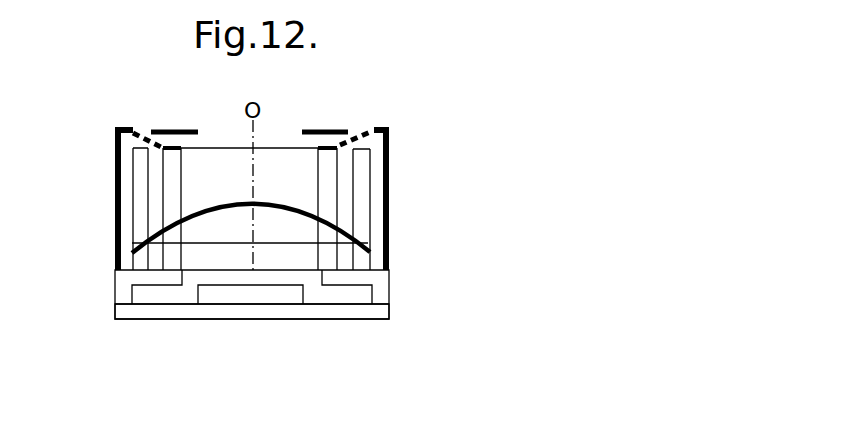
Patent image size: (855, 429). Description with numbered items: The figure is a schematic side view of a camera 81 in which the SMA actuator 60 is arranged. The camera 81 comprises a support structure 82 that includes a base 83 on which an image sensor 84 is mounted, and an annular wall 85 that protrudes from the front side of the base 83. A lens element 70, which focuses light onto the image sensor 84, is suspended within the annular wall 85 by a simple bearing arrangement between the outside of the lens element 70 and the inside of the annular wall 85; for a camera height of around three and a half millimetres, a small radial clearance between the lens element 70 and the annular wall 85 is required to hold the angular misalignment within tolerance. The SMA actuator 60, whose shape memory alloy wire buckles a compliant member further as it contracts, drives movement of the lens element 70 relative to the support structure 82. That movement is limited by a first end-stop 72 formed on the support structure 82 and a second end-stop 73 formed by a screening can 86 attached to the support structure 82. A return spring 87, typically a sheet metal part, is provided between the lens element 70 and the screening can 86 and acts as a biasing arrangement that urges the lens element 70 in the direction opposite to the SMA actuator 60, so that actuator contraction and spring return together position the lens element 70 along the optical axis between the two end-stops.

The SMA actuator 60 is at (216, 206).
The lens element 70 is at (328, 178).
The first end-stop 72 is at (338, 277).
The second end-stop 73 is at (322, 130).
The camera 81 is at (98, 222).
The support structure 82 is at (389, 286).
The base 83 is at (313, 316).
The image sensor 84 is at (272, 303).
The annular wall 85 is at (365, 210).
The screening can 86 is at (389, 188).
The return spring 87 is at (342, 133).